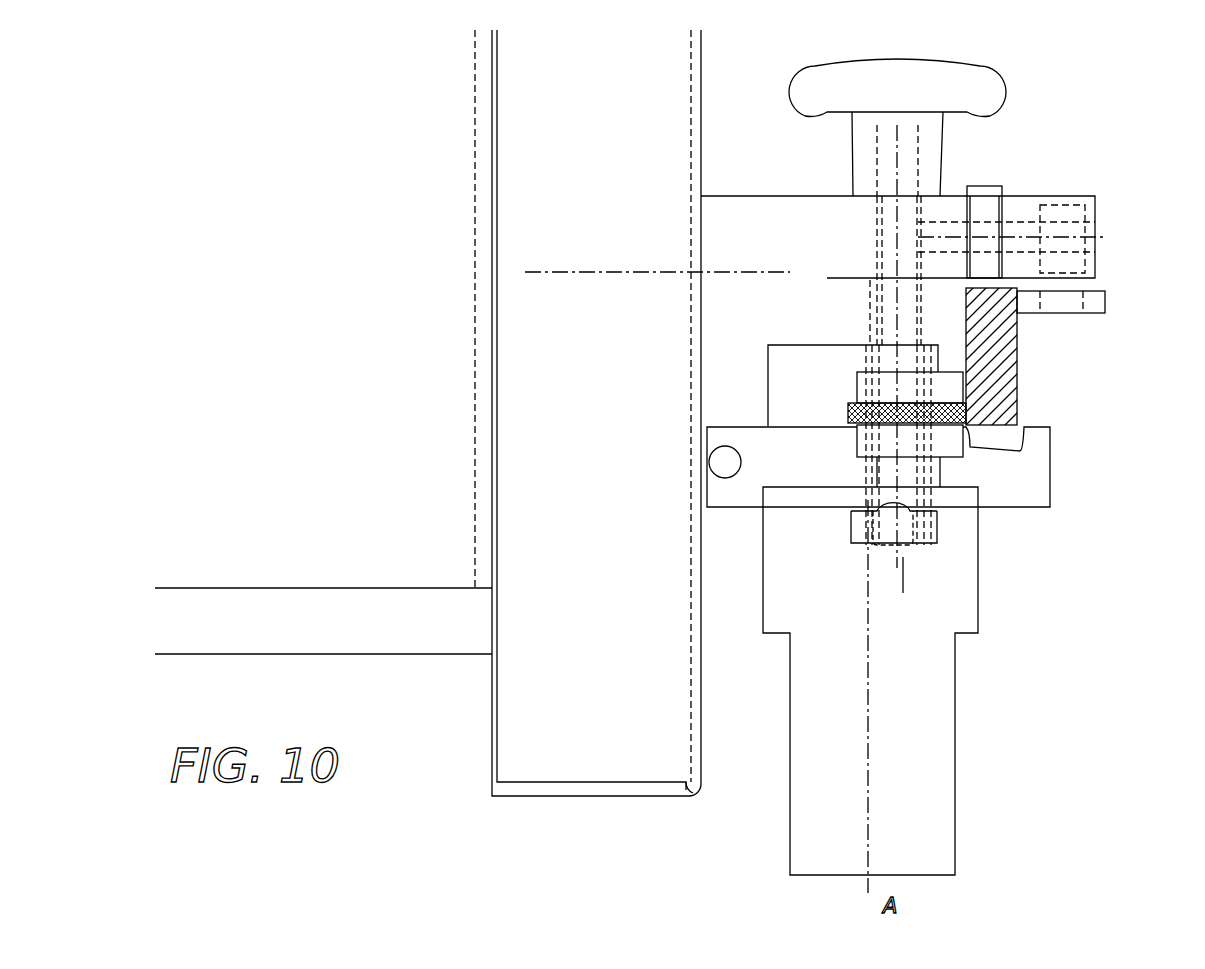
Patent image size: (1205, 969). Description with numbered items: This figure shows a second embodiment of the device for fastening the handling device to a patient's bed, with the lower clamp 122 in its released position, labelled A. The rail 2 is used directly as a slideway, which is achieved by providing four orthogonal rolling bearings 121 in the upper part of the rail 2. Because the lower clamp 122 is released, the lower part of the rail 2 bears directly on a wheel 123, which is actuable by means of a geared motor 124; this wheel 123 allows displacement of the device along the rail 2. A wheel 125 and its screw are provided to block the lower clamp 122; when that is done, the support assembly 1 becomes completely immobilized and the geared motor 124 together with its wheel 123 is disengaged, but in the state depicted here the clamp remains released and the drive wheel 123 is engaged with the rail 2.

The support assembly 1 is at (258, 654).
The rail 2 is at (1007, 370).
The rolling bearing 121 is at (985, 192).
The lower clamp 122 is at (1023, 489).
The wheel 123 is at (862, 402).
The geared motor 124 is at (917, 681).
The wheel 125 is at (972, 83).